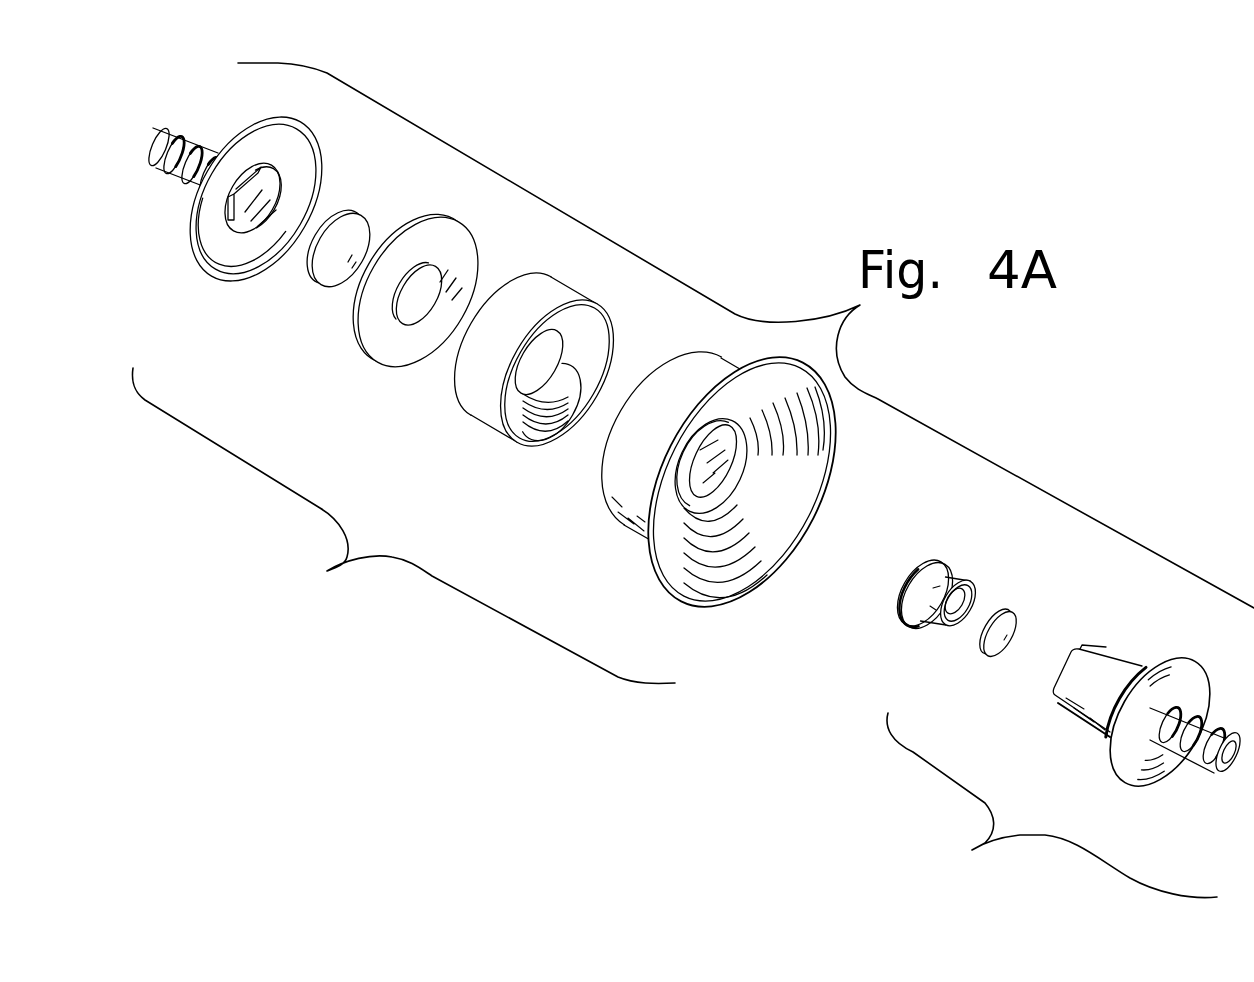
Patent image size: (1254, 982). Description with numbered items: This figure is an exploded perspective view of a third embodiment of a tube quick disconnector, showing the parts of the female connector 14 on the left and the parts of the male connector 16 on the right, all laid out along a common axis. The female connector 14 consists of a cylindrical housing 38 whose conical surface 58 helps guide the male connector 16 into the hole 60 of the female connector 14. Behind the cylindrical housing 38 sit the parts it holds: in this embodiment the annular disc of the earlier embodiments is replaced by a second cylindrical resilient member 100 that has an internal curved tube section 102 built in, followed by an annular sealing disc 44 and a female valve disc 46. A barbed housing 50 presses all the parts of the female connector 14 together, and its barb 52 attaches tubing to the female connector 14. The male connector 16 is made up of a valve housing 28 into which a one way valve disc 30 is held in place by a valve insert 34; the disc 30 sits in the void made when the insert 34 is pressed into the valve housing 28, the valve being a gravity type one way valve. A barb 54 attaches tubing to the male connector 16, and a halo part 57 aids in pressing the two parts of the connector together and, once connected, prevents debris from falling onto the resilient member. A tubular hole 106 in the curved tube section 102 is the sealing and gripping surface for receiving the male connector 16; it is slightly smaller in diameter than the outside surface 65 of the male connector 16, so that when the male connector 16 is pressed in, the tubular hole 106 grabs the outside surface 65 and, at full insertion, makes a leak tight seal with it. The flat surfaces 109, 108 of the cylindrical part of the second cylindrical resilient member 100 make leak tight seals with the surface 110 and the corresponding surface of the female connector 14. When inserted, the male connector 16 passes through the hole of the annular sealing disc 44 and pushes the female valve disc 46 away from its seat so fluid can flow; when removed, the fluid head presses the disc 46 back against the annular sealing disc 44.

The female connector 14 is at (693, 373).
The male connector 16 is at (1052, 805).
The valve housing 28 is at (1112, 660).
The one way valve disc 30 is at (1018, 628).
The valve insert 34 is at (920, 578).
The cylindrical housing 38 is at (622, 455).
The annular sealing disc 44 is at (385, 343).
The female valve disc 46 is at (355, 240).
The barbed housing 50 is at (255, 125).
The barb 52 is at (162, 142).
The barb 54 is at (1184, 753).
The halo part 57 is at (1127, 765).
The conical surface 58 is at (797, 480).
The hole 60 is at (747, 477).
The outside surface 65 is at (1112, 702).
The second cylindrical resilient member 100 is at (550, 290).
The internal curved tube section 102 is at (578, 350).
The tubular hole 106 is at (590, 422).
The flat surface 108 is at (512, 448).
The flat surface 109 is at (500, 382).
The surface 110 is at (240, 247).